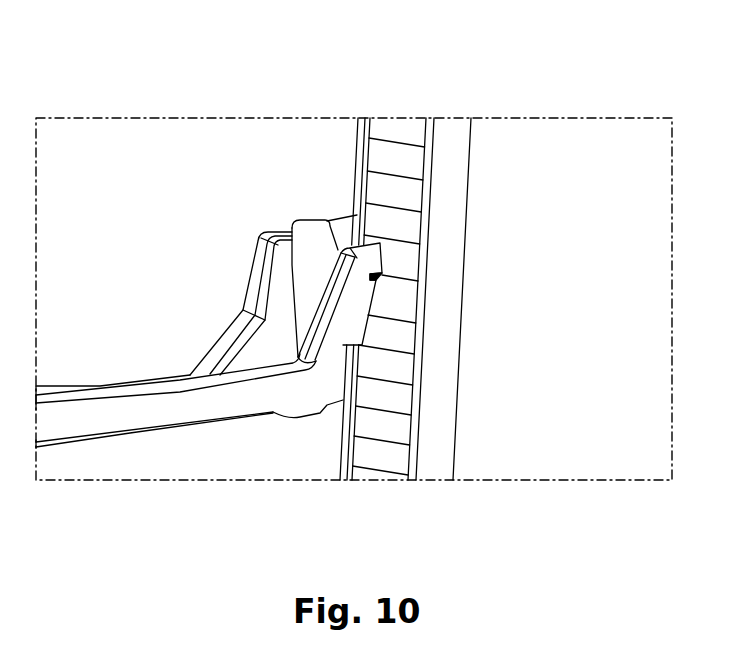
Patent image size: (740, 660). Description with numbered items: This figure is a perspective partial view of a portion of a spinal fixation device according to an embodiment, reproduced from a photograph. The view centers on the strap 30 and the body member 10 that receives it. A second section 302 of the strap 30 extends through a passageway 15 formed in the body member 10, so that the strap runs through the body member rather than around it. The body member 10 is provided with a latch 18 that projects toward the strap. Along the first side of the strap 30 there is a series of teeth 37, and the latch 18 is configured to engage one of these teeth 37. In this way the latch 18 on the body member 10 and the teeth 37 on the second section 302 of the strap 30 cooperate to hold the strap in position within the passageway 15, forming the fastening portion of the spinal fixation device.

The body member 10 is at (215, 410).
The passageway 15 is at (340, 381).
The latch 18 is at (373, 288).
The strap 30 is at (458, 253).
The second section 302 is at (450, 142).
The teeth 37 is at (400, 336).